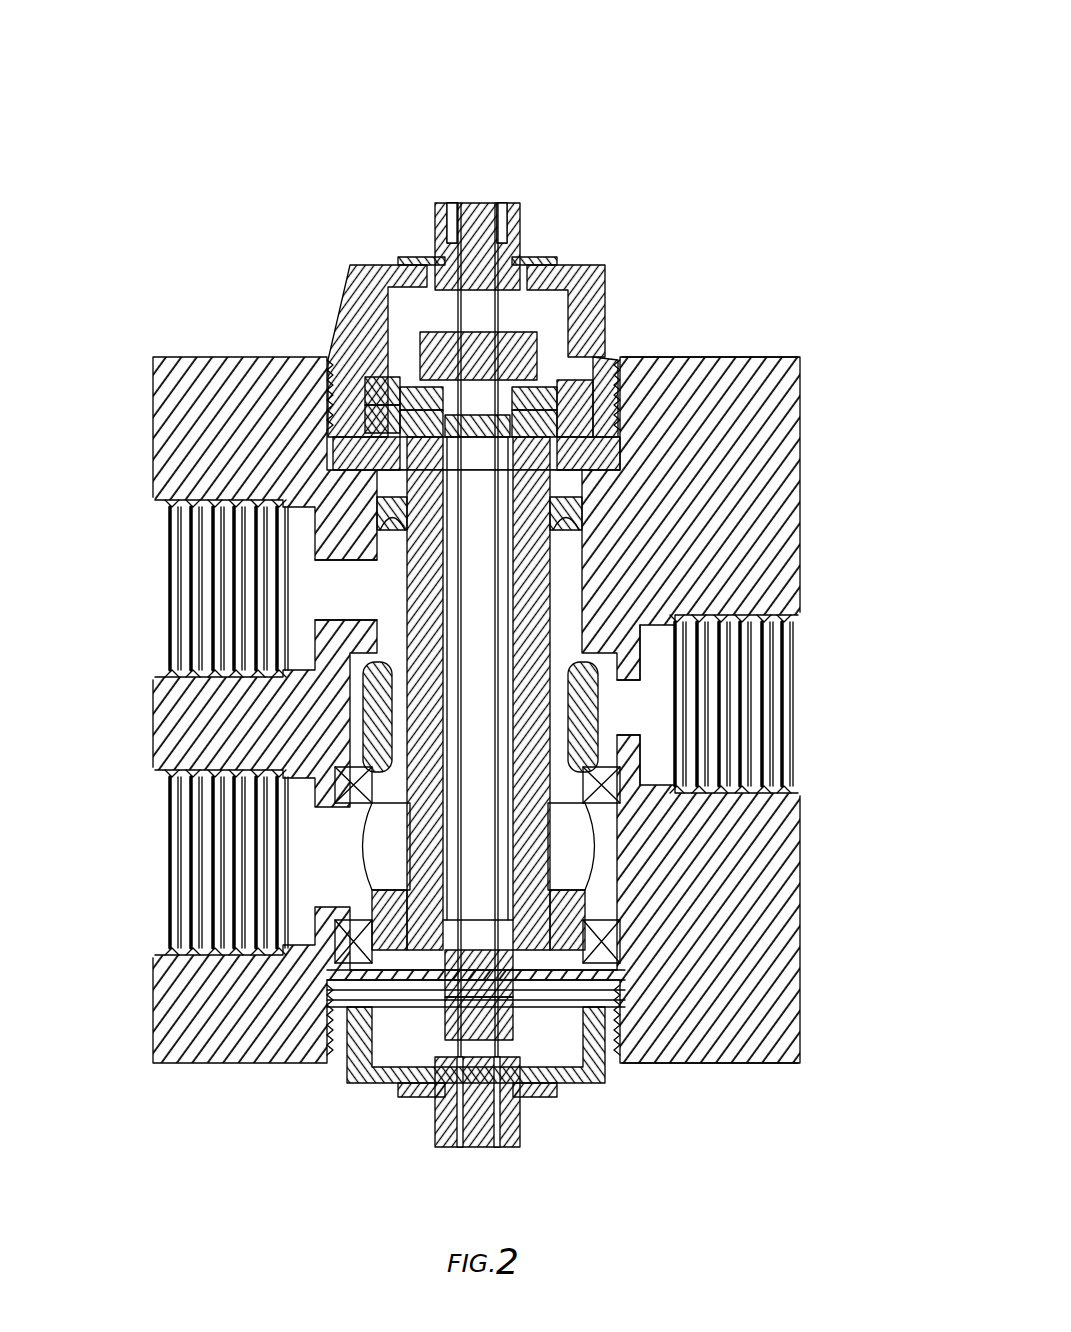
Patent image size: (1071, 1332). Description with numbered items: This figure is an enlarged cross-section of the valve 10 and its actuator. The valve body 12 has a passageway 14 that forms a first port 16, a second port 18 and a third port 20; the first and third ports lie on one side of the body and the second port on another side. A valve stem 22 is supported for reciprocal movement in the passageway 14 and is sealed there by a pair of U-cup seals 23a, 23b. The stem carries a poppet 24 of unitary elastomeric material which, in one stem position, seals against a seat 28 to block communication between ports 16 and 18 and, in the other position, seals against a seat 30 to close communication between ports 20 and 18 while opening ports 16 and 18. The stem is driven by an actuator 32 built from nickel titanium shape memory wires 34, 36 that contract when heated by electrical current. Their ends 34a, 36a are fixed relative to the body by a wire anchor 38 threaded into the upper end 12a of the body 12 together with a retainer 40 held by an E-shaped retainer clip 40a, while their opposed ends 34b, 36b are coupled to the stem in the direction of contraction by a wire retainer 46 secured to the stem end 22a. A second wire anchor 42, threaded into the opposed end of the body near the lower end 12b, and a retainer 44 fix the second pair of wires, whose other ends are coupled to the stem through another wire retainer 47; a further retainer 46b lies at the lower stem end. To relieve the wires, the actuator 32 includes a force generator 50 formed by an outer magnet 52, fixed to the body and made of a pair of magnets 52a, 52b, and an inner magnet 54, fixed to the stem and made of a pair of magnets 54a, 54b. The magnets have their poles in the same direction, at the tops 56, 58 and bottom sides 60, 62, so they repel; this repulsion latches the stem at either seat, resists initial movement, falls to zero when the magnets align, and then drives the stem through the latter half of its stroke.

The valve 10 is at (700, 86).
The valve body 12 is at (501, 718).
The upper end of body 12a is at (785, 357).
The housing lower surface 12b is at (730, 1065).
The passageway 14 is at (565, 600).
The first port 16 is at (150, 540).
The second port 18 is at (795, 765).
The third port 20 is at (162, 838).
The valve stem 22 is at (640, 683).
The end of stem 22a is at (510, 759).
The U-cup seal 23a is at (592, 524).
The U-cup seal 23b is at (578, 941).
The poppet 24 is at (360, 658).
The seat 28 is at (598, 717).
The seat 30 is at (358, 772).
The actuator 32 is at (731, 432).
The shape memory wire 34 is at (558, 628).
The end of wire 34a is at (417, 247).
The opposed end of wire 34b is at (447, 997).
The shape memory wire 36 is at (565, 630).
The end of wire 36a is at (485, 204).
The opposed end of wire 36b is at (603, 1058).
The wire anchor 38 is at (584, 262).
The retainer 40 is at (449, 648).
The retainer clip 40a is at (385, 395).
The second wire anchor 42 is at (344, 1081).
The retainer 44 is at (524, 1150).
The wire retainer 46 is at (532, 1097).
The washer lower portion 46b is at (395, 978).
The wire retainer 47 is at (478, 675).
The force generator 50 is at (540, 392).
The magnet 52 is at (602, 337).
The magnet 52a is at (596, 400).
The magnet 52b is at (600, 415).
The magnet 54 is at (344, 337).
The magnet 54a is at (338, 400).
The magnet 54b is at (336, 437).
The top side of magnet 56 is at (384, 380).
The top side of magnet 58 is at (390, 262).
The bottom side of magnet 60 is at (372, 420).
The bottom side of magnet 62 is at (410, 392).